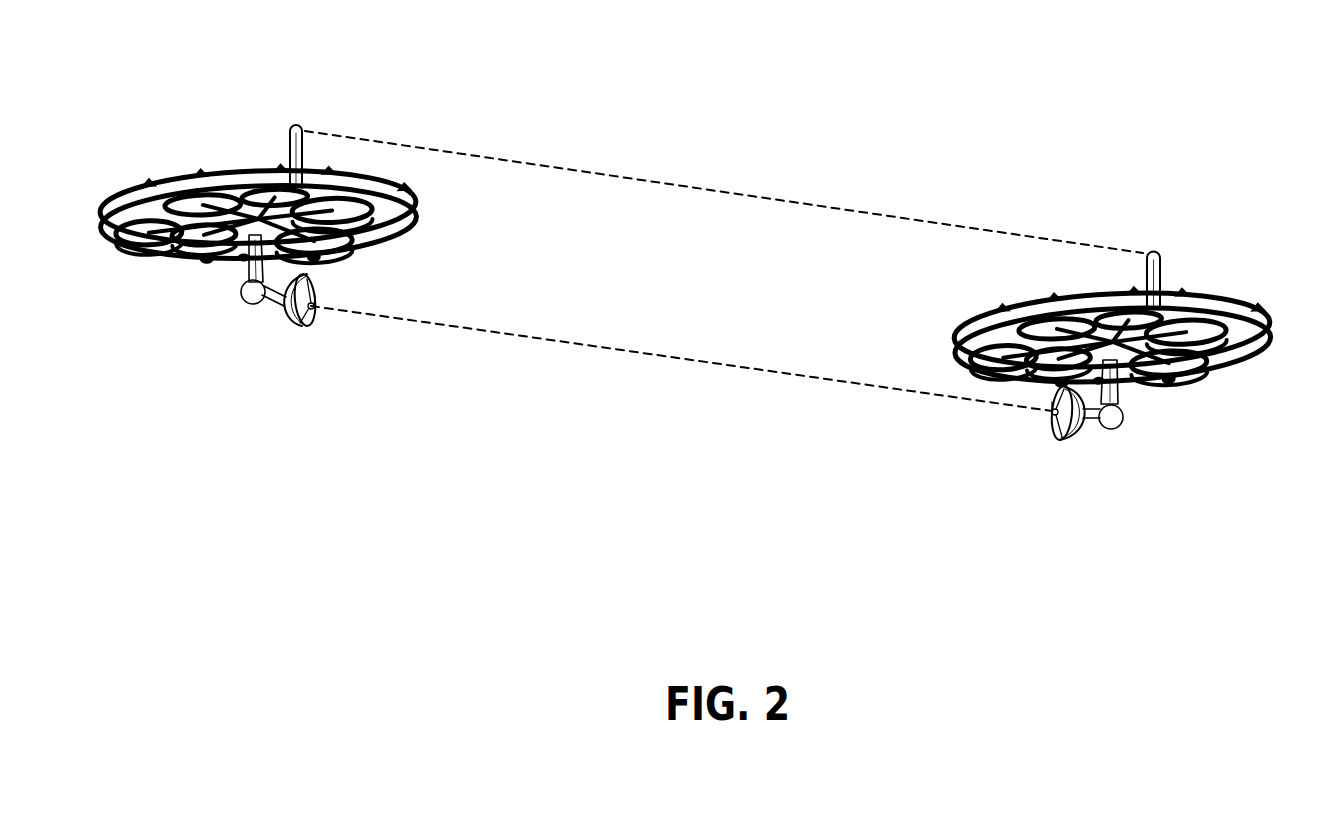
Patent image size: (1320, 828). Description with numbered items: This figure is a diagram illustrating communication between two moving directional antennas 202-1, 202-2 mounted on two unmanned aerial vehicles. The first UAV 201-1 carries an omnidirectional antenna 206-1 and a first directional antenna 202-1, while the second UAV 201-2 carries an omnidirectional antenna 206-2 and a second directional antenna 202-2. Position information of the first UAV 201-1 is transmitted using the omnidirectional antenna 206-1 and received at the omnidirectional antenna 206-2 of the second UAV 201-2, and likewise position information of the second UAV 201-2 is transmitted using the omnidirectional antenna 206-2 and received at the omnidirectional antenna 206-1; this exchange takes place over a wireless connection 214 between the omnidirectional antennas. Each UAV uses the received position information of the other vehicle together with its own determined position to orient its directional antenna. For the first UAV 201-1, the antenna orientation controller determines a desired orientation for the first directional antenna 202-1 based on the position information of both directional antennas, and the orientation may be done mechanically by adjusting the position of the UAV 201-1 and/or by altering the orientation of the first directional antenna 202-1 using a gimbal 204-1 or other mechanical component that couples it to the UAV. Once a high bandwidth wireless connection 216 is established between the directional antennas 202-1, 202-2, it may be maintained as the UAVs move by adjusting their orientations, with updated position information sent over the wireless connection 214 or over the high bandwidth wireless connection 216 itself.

The first UAV 201-1 is at (372, 187).
The second UAV 201-2 is at (1227, 315).
The omnidirectional antenna 206-1 is at (290, 134).
The omnidirectional antenna 206-2 is at (1152, 267).
The gimbal 204-1 is at (241, 294).
The first directional antenna 202-1 is at (302, 328).
The second directional antenna 202-2 is at (1077, 433).
The wireless connection 214 is at (727, 193).
The high bandwidth wireless connection 216 is at (711, 365).